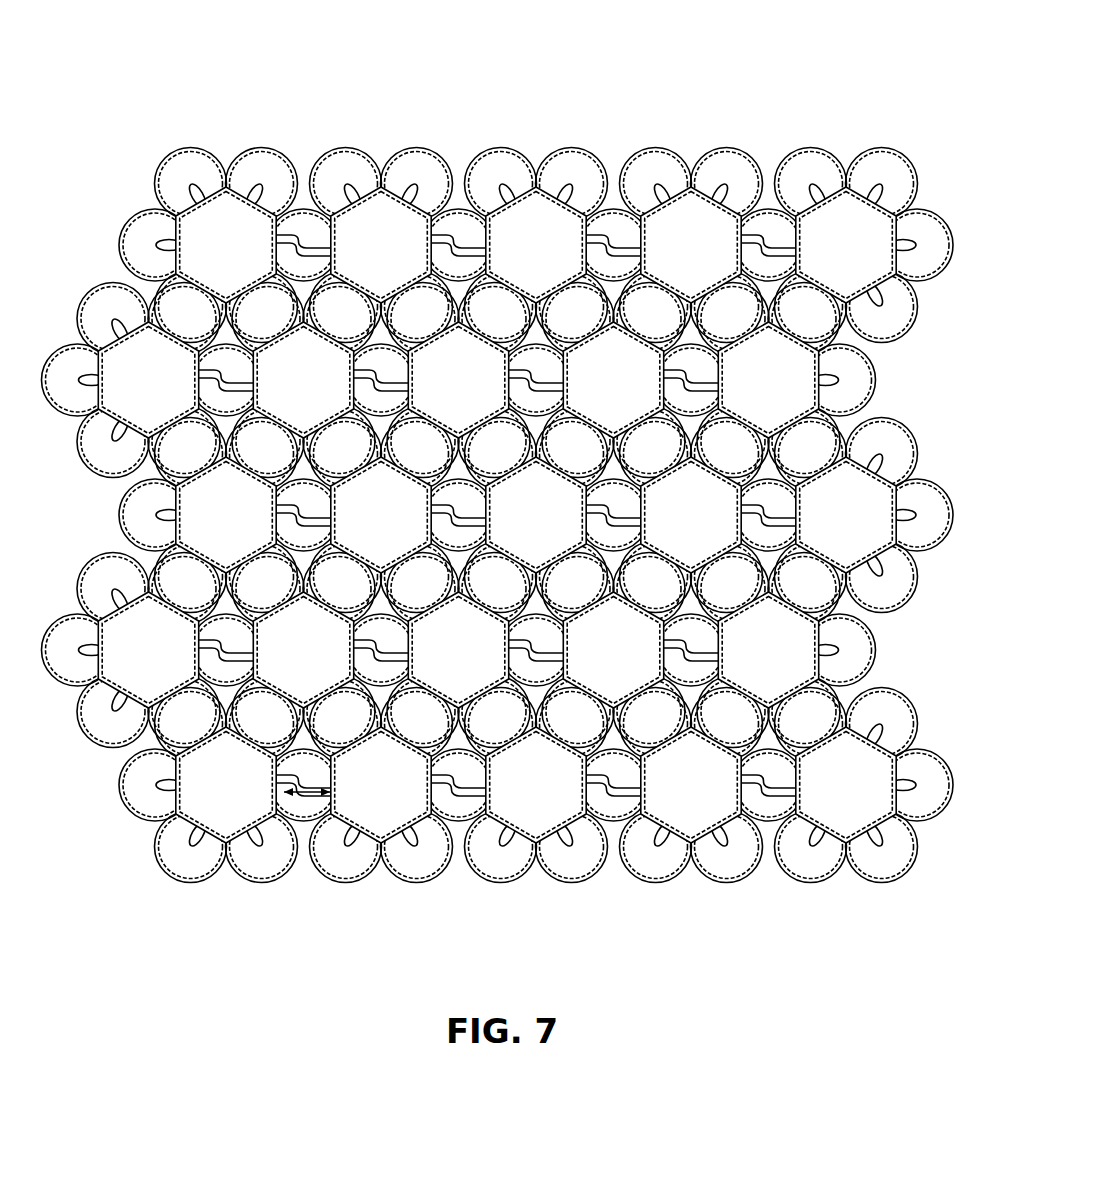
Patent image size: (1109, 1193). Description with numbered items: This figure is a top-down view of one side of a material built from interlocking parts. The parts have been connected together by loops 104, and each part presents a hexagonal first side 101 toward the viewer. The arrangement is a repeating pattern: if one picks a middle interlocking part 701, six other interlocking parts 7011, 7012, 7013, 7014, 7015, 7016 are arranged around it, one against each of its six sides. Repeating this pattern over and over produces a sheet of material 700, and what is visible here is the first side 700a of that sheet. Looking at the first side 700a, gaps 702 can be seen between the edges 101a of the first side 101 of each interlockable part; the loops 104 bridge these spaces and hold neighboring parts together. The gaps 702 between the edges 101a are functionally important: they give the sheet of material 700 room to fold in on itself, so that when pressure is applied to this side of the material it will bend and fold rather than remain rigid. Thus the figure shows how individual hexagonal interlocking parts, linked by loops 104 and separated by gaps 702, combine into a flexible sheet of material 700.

The sheet of material 700 is at (729, 94).
The first side of the sheet of material 700a is at (351, 96).
The loops 104 is at (297, 250).
The first side of the interlockable part 101 is at (130, 388).
The interlocking part 7011 is at (434, 388).
The interlocking part 7012 is at (589, 388).
The interlocking part 7013 is at (666, 523).
The interlocking part 7014 is at (589, 658).
The interlocking part 7015 is at (434, 658).
The interlocking part 7016 is at (356, 523).
The middle interlocking part 701 is at (517, 523).
The edges of the first side 101a is at (280, 780).
The gaps 702 is at (311, 797).